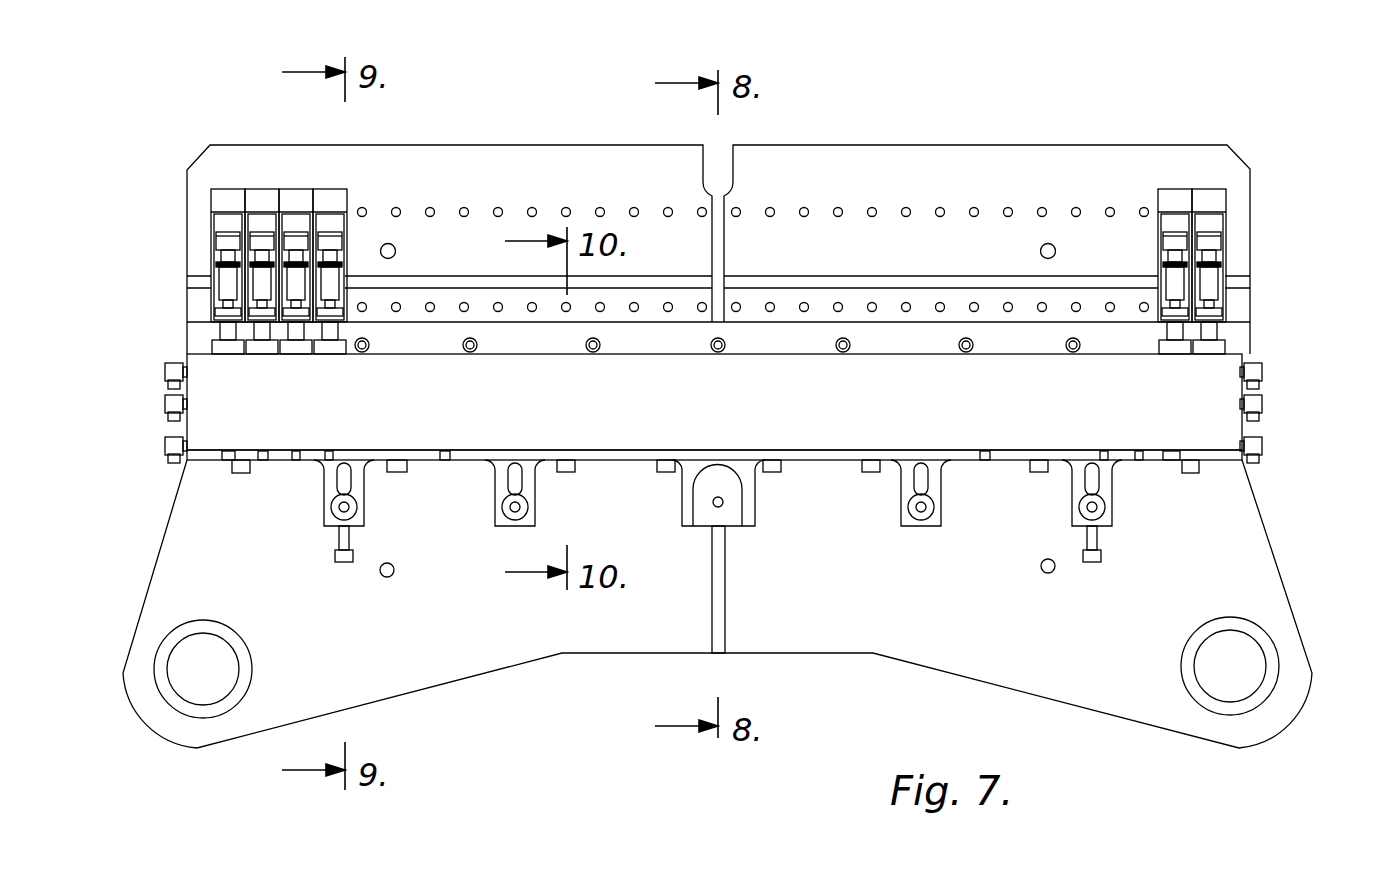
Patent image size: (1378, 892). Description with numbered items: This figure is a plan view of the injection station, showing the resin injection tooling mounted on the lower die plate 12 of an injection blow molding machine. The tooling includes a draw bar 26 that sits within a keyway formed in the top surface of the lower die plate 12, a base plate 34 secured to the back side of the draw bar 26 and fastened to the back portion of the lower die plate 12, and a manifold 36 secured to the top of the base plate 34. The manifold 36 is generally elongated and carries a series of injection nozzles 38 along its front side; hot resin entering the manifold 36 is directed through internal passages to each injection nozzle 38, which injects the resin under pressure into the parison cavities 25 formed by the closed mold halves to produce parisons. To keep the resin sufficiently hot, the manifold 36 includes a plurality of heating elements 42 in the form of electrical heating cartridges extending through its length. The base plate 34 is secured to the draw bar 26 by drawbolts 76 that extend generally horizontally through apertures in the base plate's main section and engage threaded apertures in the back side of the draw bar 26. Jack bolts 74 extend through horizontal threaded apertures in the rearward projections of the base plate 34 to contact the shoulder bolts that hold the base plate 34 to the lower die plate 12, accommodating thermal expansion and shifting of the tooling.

The lower die plate 12 is at (180, 553).
The parison cavity 25 is at (222, 280).
The draw bar 26 is at (187, 341).
The base plate 34 is at (197, 462).
The manifold 36 is at (205, 415).
The injection nozzle 38 is at (218, 328).
The heating element 42 is at (163, 402).
The jack bolt 74 is at (340, 558).
The drawbolt 76 is at (397, 462).